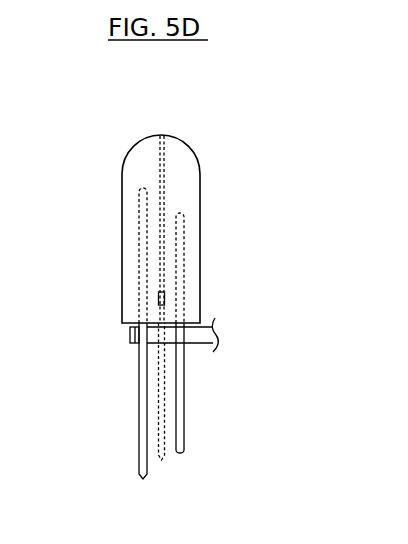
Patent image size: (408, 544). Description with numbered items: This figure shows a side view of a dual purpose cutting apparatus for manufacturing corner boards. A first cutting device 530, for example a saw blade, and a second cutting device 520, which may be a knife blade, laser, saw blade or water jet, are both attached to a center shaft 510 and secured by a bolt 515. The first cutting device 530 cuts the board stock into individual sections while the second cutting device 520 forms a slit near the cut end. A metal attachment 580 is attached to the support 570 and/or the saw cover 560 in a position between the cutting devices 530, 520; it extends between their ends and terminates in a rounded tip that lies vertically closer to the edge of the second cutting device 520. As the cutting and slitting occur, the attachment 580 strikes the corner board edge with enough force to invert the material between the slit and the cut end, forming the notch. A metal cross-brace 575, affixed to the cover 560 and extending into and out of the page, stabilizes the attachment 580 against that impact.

The center shaft 510 is at (201, 343).
The bolt 515 is at (130, 343).
The second cutting device 520 is at (184, 437).
The first cutting device 530 is at (139, 406).
The saw cover 560 is at (200, 175).
The support 570 is at (164, 134).
The metal cross-brace 575 is at (158, 294).
The metal attachment 580 is at (163, 462).